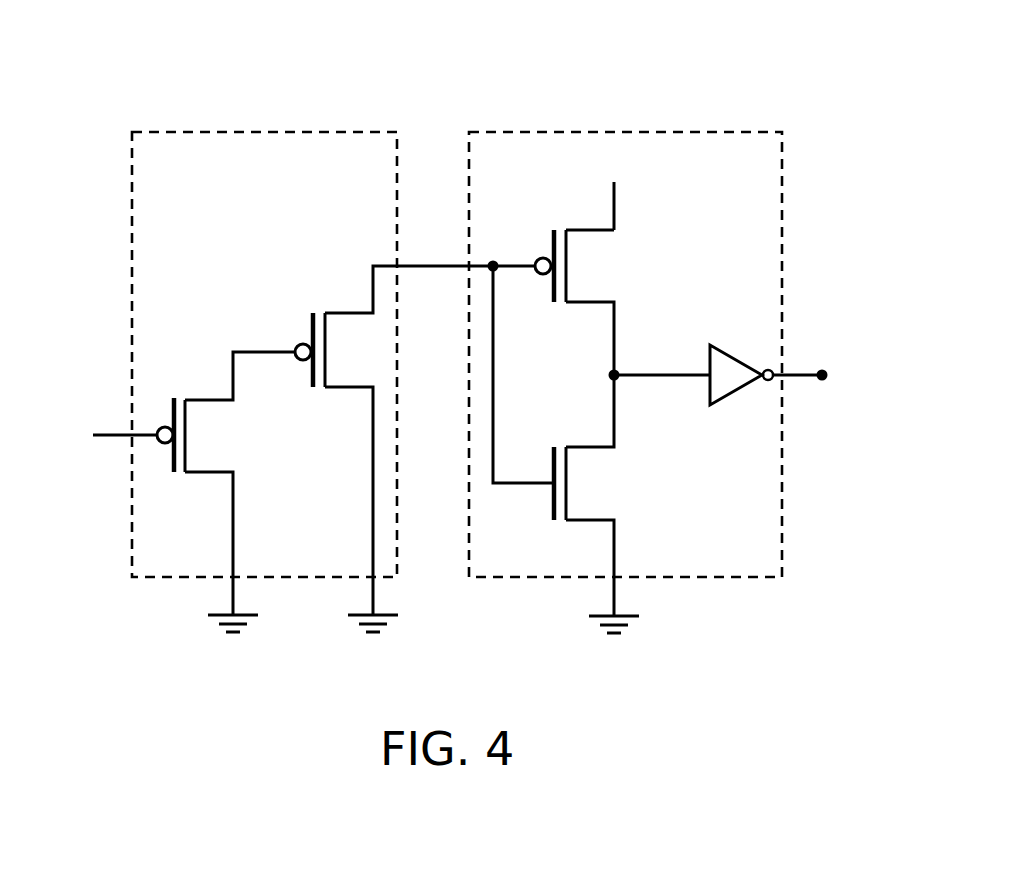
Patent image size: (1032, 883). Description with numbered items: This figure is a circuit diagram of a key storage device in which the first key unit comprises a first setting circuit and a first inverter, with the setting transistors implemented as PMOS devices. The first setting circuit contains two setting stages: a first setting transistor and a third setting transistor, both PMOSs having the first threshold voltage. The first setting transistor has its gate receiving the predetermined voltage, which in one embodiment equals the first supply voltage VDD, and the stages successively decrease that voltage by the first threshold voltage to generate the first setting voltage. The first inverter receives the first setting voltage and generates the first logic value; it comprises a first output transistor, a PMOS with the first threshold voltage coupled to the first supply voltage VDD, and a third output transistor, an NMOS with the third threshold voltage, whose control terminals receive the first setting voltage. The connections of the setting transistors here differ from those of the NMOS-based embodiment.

The first supply voltage VDD is at (612, 190).